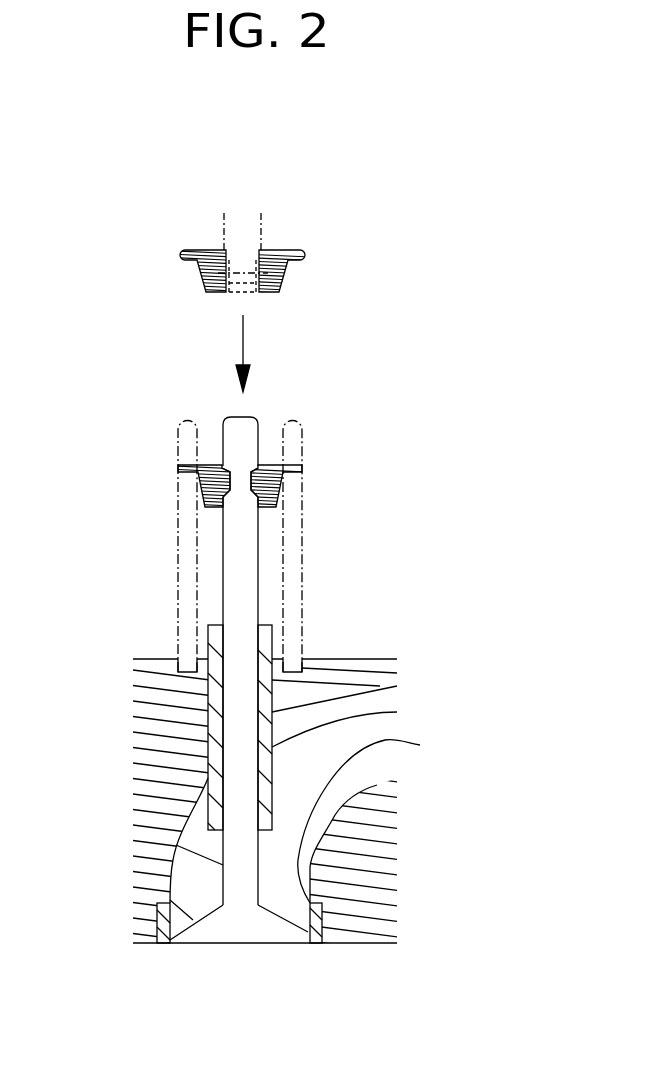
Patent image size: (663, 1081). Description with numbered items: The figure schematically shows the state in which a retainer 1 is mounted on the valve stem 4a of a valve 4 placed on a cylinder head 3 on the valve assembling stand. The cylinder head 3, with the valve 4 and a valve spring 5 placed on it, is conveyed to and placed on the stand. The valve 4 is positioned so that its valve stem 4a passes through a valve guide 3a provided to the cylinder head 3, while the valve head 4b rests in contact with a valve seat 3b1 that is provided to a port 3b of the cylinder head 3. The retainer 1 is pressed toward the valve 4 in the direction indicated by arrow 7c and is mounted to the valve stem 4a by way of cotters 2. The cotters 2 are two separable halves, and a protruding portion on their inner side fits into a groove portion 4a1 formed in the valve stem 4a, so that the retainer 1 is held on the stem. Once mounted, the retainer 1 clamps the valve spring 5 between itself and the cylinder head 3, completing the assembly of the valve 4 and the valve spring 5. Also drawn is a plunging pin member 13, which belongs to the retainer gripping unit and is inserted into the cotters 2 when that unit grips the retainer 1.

The retainer 1 is at (297, 249).
The cotters 2 is at (253, 289).
The plunging pin member 13 is at (222, 228).
The arrow 7c is at (242, 330).
The valve stem 4a is at (223, 578).
The groove portion 4a1 is at (230, 470).
The valve spring 5 is at (303, 553).
The cylinder head 3 is at (381, 659).
The valve guide 3a is at (397, 712).
The valve seat 3b1 is at (420, 745).
The port 3b is at (377, 785).
The valve 4 is at (177, 845).
The valve head 4b is at (157, 903).